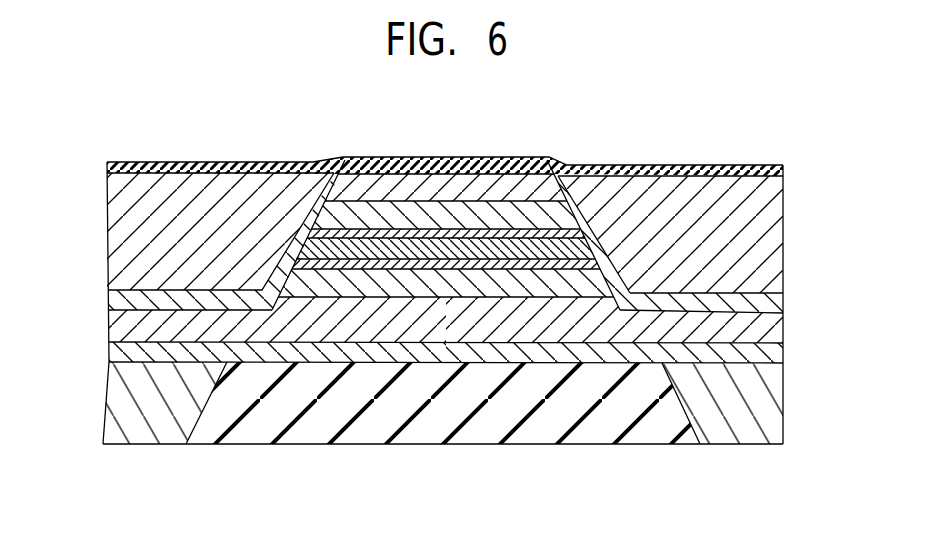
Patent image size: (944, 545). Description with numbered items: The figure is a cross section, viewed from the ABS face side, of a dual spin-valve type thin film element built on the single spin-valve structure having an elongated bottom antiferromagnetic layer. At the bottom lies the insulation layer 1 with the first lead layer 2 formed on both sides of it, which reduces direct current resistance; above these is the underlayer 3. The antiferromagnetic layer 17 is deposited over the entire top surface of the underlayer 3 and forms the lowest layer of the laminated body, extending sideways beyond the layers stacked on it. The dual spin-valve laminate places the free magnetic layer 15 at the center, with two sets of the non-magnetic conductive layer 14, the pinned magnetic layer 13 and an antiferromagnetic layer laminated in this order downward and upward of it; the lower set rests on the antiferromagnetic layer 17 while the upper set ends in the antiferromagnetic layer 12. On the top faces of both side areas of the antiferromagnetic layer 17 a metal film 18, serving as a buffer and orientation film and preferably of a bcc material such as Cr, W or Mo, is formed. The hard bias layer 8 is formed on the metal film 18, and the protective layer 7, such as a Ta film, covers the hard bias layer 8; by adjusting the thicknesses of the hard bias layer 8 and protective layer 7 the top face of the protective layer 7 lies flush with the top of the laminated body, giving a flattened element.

The insulation layer 1 is at (480, 428).
The first lead layer 2 is at (110, 423).
The underlayer 3 is at (760, 352).
The protective layer 7 is at (231, 162).
The hard bias layer 8 is at (108, 233).
The antiferromagnetic layer 12 is at (341, 180).
The pinned magnetic layer 13 is at (416, 273).
The non-magnetic conductive layer 14 is at (484, 263).
The free magnetic layer 15 is at (497, 247).
The antiferromagnetic layer 17 is at (108, 322).
The metal film 18 is at (110, 302).